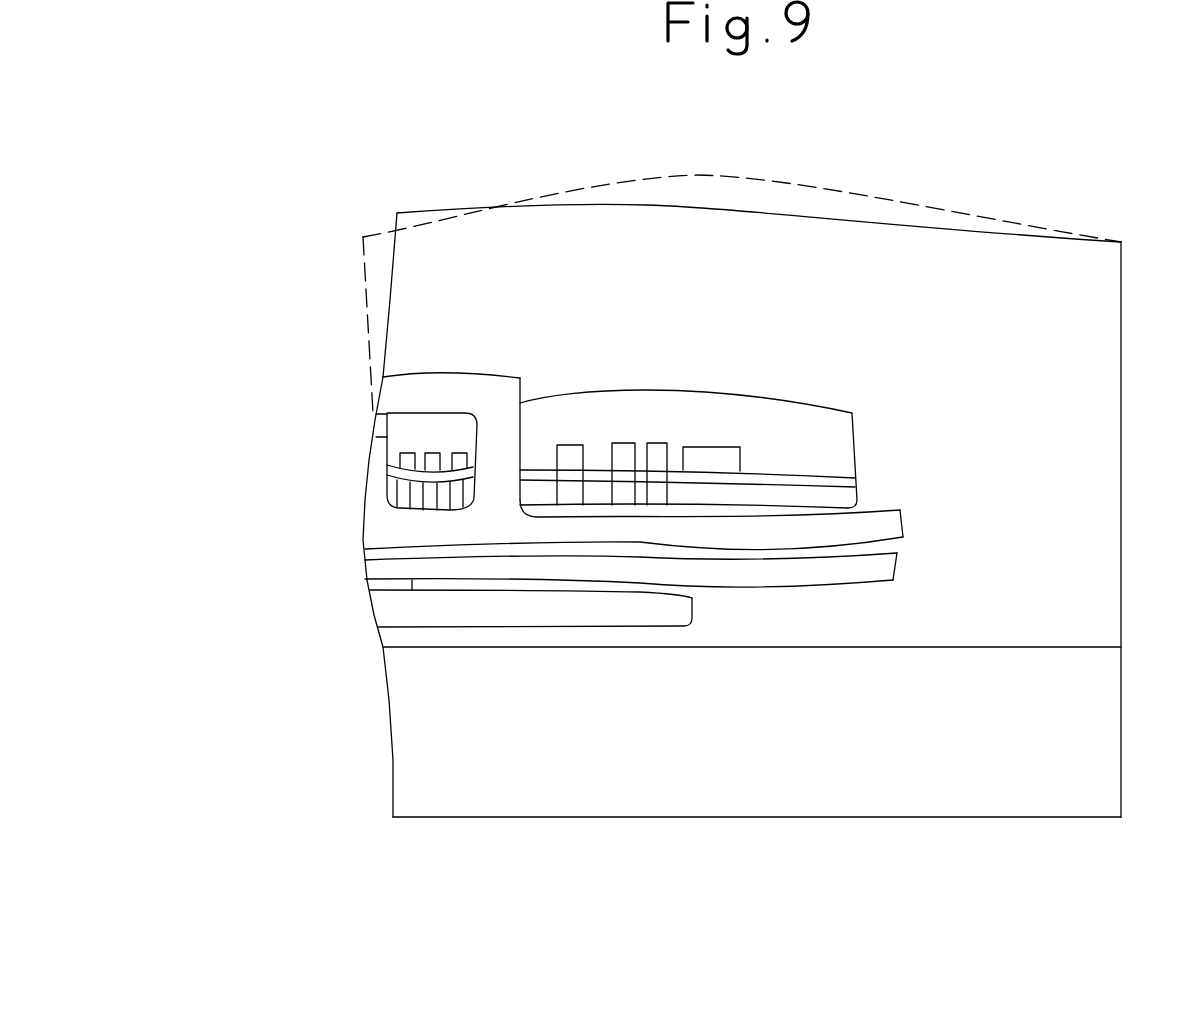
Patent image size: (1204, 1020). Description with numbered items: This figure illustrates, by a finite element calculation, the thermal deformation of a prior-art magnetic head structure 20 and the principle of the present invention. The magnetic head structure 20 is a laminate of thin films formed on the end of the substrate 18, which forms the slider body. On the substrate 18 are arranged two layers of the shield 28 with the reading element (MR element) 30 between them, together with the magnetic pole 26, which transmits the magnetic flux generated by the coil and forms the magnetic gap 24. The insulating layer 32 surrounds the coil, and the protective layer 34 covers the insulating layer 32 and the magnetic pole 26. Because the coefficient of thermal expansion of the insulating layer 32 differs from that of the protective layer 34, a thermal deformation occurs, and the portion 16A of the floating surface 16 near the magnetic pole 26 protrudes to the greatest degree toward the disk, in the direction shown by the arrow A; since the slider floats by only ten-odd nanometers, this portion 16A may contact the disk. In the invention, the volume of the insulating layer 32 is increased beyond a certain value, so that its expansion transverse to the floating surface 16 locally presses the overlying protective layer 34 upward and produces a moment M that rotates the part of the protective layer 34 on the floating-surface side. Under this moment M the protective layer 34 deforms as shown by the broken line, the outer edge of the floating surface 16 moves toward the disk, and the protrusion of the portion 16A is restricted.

The floating surface 16 is at (390, 748).
The portion of the floating surface 16A is at (366, 460).
The substrate 18 is at (752, 792).
The magnetic head structure 20 is at (749, 147).
The magnetic gap 24 is at (375, 422).
The magnetic pole 26 is at (404, 392).
The shield 28 is at (378, 572).
The reading element (MR element) 30 is at (377, 592).
The insulating layer 32 is at (840, 497).
The protective layer 34 is at (1095, 353).
The moment M is at (347, 308).
The arrow A is at (357, 493).